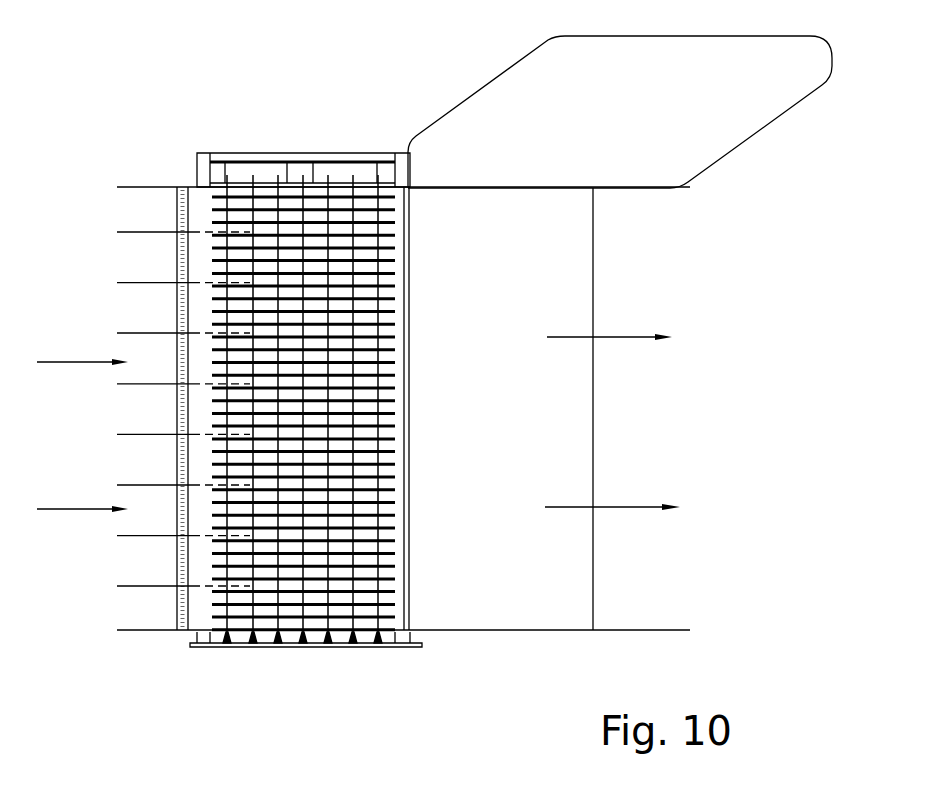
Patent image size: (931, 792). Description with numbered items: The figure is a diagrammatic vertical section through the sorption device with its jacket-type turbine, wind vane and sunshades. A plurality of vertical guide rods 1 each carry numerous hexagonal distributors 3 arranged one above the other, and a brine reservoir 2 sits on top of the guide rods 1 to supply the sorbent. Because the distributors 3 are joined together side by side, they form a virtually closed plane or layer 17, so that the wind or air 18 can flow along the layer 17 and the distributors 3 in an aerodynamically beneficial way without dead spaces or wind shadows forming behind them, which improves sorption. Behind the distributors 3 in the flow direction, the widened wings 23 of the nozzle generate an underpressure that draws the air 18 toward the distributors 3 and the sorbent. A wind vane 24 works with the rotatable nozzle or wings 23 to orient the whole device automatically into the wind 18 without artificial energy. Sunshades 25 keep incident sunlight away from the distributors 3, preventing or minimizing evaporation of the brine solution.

The guide rod 1 is at (356, 180).
The brine reservoir 2 is at (338, 167).
The distributor 3 is at (395, 528).
The layer 17 is at (395, 262).
The air 18 is at (72, 360).
The wing 23 is at (593, 413).
The wind vane 24 is at (645, 116).
The sunshade 25 is at (150, 185).